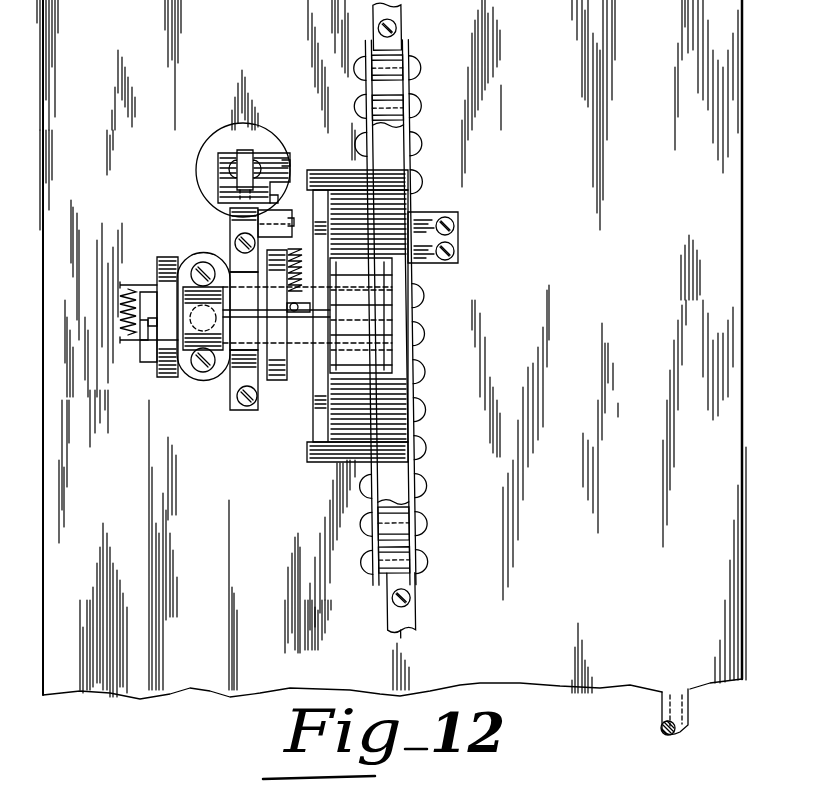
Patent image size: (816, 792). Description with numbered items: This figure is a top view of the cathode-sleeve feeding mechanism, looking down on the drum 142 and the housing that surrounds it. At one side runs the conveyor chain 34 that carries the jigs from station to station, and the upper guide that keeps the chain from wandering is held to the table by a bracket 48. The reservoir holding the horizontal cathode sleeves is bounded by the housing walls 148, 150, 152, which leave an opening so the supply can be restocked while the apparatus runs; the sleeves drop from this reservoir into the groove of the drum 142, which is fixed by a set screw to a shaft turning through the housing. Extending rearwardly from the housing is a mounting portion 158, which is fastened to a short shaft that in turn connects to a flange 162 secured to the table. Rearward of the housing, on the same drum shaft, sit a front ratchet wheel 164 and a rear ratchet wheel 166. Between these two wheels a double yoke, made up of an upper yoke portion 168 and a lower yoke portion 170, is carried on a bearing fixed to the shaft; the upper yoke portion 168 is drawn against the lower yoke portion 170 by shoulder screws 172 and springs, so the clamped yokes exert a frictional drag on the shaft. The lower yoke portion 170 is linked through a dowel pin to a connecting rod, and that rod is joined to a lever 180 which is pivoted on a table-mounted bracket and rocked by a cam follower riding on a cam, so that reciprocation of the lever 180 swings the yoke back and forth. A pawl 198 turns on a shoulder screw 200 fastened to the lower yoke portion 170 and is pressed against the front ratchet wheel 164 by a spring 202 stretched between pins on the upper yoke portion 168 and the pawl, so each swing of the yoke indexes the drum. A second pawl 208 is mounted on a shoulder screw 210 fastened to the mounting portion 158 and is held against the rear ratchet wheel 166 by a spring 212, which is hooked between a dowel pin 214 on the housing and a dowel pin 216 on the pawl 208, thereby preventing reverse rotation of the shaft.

The conveyor chain 34 is at (426, 99).
The bracket 48 is at (458, 237).
The drum 142 is at (392, 357).
The housing wall 148 is at (406, 419).
The housing wall 150 is at (338, 410).
The housing wall 152 is at (392, 218).
The mounting portion 158 is at (212, 295).
The flange 162 is at (190, 266).
The front ratchet wheel 164 is at (267, 382).
The rear ratchet wheel 166 is at (173, 382).
The upper yoke portion 168 is at (246, 311).
The lower yoke portion 170 is at (218, 172).
The shoulder screw 172 is at (241, 409).
The lever 180 is at (272, 157).
The pawl 198 is at (272, 245).
The shoulder screw 200 is at (290, 216).
The spring 202 is at (301, 266).
The pawl 208 is at (168, 283).
The shoulder screw 210 is at (160, 336).
The spring 212 is at (120, 306).
The dowel pin 214 is at (144, 338).
The dowel pin 216 is at (157, 285).